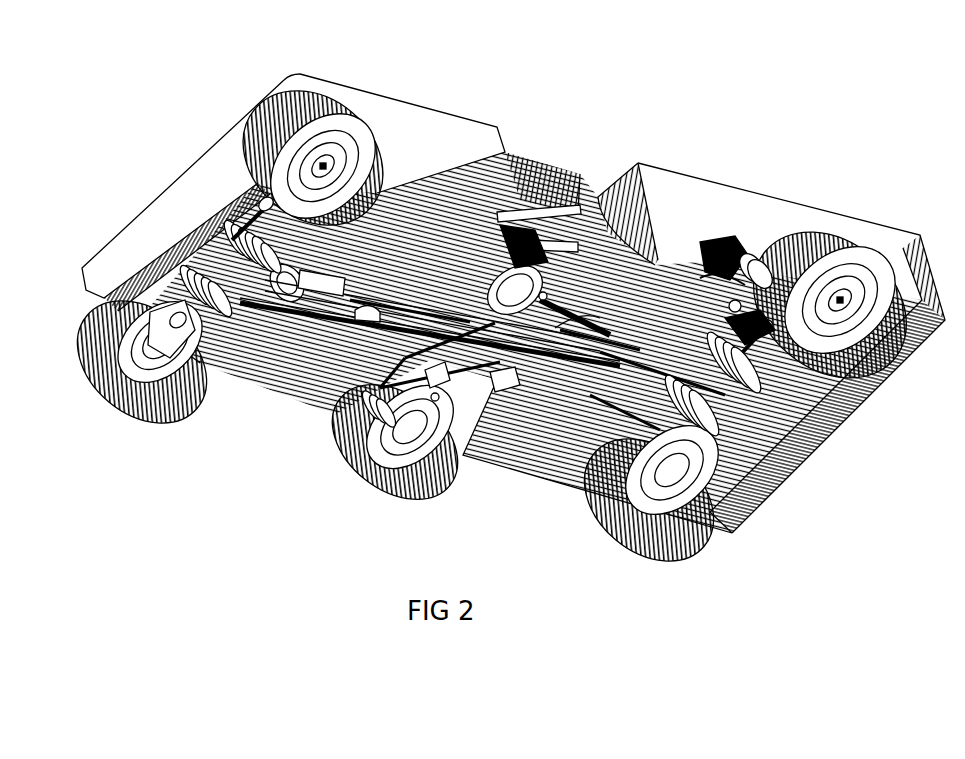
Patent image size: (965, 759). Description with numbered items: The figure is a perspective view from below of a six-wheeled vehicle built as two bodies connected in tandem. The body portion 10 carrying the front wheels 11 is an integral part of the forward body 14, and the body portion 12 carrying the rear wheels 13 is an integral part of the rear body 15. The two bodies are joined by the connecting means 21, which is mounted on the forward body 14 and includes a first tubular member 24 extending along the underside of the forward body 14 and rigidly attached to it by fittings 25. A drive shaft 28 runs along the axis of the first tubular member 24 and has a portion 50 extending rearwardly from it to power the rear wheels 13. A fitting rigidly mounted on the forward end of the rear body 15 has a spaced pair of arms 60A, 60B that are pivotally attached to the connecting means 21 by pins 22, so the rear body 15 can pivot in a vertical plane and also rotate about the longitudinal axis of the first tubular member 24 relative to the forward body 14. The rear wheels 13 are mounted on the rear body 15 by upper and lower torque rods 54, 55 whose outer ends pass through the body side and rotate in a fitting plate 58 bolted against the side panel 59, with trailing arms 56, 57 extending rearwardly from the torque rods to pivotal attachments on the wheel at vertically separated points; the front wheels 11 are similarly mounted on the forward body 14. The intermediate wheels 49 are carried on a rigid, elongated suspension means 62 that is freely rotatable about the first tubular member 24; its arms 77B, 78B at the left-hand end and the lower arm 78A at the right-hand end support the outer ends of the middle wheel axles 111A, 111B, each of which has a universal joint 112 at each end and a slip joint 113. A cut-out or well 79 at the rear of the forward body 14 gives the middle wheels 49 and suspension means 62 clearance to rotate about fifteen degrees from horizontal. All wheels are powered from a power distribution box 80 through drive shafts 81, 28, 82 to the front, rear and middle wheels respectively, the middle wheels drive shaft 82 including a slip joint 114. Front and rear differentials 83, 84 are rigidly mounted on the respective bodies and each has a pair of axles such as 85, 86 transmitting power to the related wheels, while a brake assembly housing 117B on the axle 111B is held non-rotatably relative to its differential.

The body portion 10 is at (305, 72).
The front wheels 11 is at (80, 328).
The body portion 12 is at (862, 220).
The rear wheels 13 is at (683, 547).
The forward body 14 is at (462, 116).
The rear body 15 is at (792, 194).
The connecting means 21 is at (504, 372).
The pins 22 is at (603, 341).
The first tubular member 24 is at (417, 306).
The fittings 25 is at (333, 271).
The drive shaft 28 is at (365, 325).
The intermediate wheels 49 is at (377, 473).
The rearward portion of drive shaft 50 is at (593, 393).
The upper torque rod 54 is at (724, 252).
The lower torque rod 55 is at (729, 306).
The arm 56 is at (754, 262).
The arm 57 is at (725, 329).
The fitting plate 58 is at (708, 282).
The rear body side panel 59 is at (675, 198).
The fitting arm 60A is at (598, 343).
The fitting arm 60B is at (533, 376).
The middle wheels suspension means 62 is at (517, 207).
The arm 77B is at (547, 210).
The lower arm 78A is at (378, 410).
The arm 78B is at (548, 259).
The cut-out or well 79 is at (386, 163).
The power distribution box 80 is at (300, 292).
The drive shaft 81 is at (273, 290).
The drive shaft 82 is at (371, 295).
The front differential 83 is at (240, 282).
The rear differential 84 is at (715, 425).
The axle 85 is at (180, 320).
The axle 86 is at (272, 203).
The middle wheel axle 111A is at (433, 388).
The middle wheel axle 111B is at (562, 301).
The universal joint 112 is at (518, 278).
The slip joint 113 is at (433, 373).
The slip joint 114 is at (390, 290).
The brake assembly housing 117B is at (553, 327).